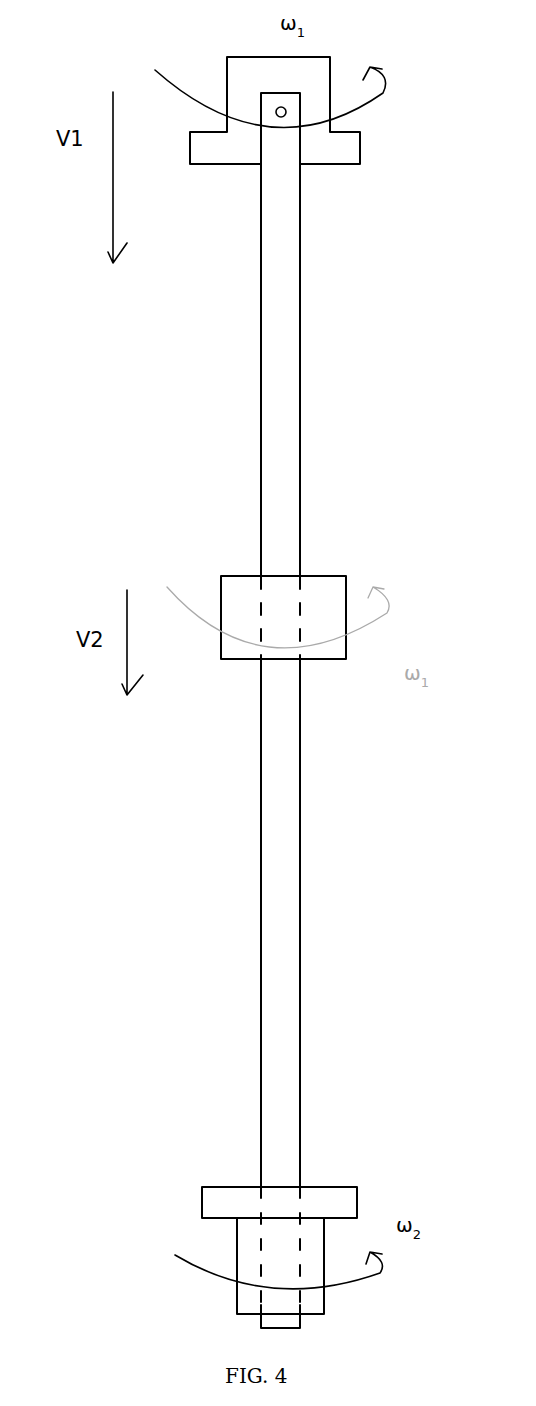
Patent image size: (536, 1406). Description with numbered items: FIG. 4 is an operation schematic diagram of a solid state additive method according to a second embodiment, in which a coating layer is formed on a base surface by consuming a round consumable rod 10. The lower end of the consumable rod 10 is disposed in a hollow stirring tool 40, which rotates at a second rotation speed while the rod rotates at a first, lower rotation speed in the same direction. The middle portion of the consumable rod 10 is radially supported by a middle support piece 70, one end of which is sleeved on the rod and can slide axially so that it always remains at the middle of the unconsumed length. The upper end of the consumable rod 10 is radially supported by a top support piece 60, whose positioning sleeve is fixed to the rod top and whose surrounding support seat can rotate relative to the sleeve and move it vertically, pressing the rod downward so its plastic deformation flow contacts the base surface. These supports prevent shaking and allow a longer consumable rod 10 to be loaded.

The consumable rod 10 is at (293, 933).
The hollow stirring tool 40 is at (252, 1248).
The top support piece 60 is at (325, 143).
The middle support piece 70 is at (318, 603).